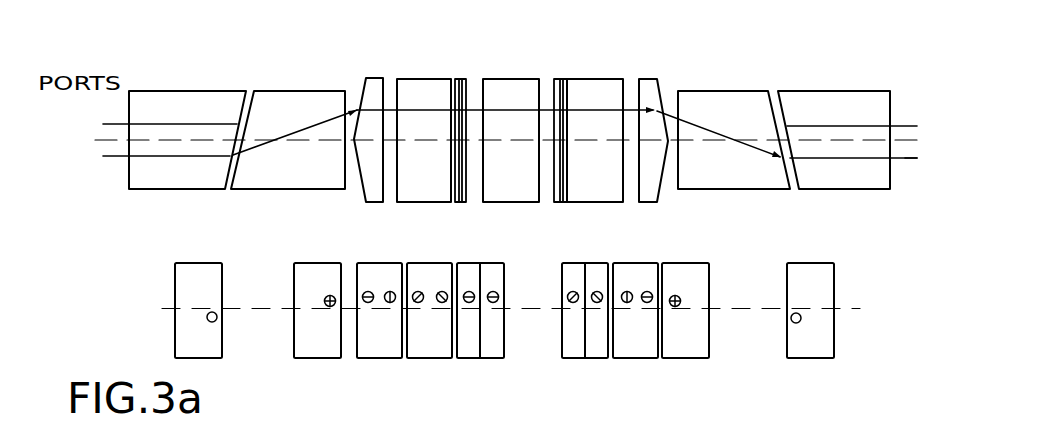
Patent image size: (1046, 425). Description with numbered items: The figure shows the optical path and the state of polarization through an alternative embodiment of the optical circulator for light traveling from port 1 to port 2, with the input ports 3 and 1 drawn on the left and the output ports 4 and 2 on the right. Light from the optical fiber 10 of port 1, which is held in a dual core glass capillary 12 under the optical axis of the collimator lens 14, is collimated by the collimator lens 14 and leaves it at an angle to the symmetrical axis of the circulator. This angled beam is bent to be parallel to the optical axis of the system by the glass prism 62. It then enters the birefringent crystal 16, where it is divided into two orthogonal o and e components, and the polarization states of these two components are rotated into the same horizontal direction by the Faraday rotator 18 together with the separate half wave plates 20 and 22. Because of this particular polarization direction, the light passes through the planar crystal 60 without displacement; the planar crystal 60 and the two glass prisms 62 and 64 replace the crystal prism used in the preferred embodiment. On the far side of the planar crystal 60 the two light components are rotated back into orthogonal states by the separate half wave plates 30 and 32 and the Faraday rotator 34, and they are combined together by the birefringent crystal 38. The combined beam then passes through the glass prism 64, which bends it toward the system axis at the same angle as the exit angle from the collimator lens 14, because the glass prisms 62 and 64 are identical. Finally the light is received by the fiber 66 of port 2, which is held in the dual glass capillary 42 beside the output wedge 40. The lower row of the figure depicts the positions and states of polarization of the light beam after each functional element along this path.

The port 1 is at (157, 156).
The port 2 is at (864, 159).
The port 3 is at (158, 124).
The port 4 is at (862, 126).
The optical fiber 10 is at (182, 180).
The dual core glass capillary 12 is at (182, 116).
The collimator lens 14 is at (283, 121).
The birefringent crystal 16 is at (437, 193).
The Faraday rotator 18 is at (457, 80).
The half wave plate 20 is at (462, 80).
The half wave plate 22 is at (464, 140).
The half wave plate 30 is at (557, 80).
The half wave plate 32 is at (561, 140).
The Faraday rotator 34 is at (567, 80).
The birefringent crystal 38 is at (617, 192).
The birefringent wedge 40 is at (728, 178).
The dual glass capillary 42 is at (847, 119).
The planar crystal 60 is at (522, 192).
The glass prism 62 is at (375, 80).
The glass prism 64 is at (658, 87).
The fiber 66 is at (914, 160).